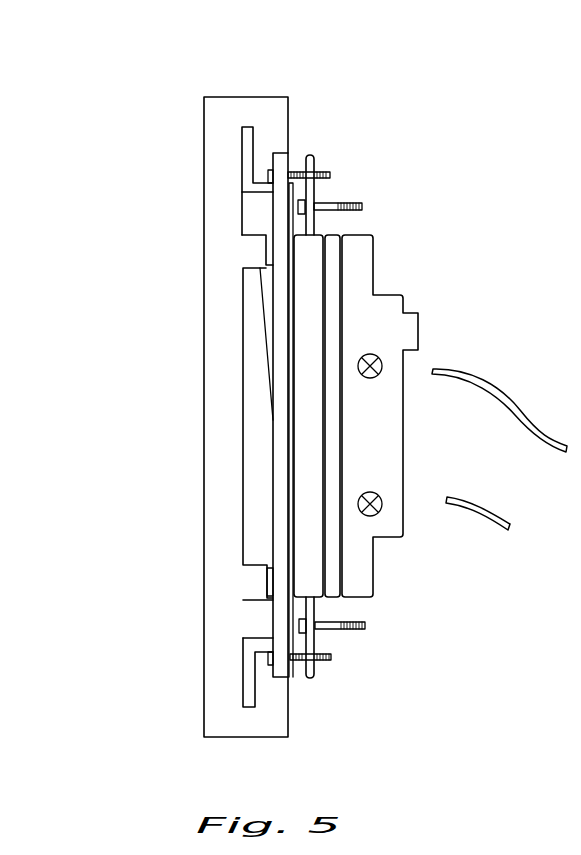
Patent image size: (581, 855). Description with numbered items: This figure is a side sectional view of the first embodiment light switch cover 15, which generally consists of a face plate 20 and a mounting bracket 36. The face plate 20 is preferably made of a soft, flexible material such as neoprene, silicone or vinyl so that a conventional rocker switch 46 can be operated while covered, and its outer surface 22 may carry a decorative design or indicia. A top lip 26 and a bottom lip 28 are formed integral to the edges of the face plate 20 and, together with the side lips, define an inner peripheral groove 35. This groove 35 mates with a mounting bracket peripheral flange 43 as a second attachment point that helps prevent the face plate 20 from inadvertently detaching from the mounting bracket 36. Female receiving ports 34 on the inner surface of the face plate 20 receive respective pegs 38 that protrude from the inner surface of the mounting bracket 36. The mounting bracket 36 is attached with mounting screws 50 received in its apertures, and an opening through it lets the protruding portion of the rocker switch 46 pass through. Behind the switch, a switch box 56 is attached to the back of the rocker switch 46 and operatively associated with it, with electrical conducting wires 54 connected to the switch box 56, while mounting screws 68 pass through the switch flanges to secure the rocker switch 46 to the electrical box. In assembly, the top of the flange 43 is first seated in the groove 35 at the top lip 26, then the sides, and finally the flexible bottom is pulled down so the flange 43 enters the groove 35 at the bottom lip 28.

The light switch cover 15 is at (432, 112).
The face plate 20 is at (240, 423).
The outer surface 22 is at (205, 459).
The top lip 26 is at (262, 157).
The bottom lip 28 is at (267, 692).
The female receiving ports 34 is at (255, 585).
The inner peripheral groove 35 is at (249, 127).
The mounting bracket 36 is at (280, 677).
The pegs 38 is at (268, 565).
The mounting bracket peripheral flange 43 is at (242, 163).
The rocker switch 46 is at (262, 282).
The mounting screws 50 is at (325, 172).
The electrical conducting wires 54 is at (513, 396).
The switch box 56 is at (373, 315).
The mounting screws 68 is at (365, 207).